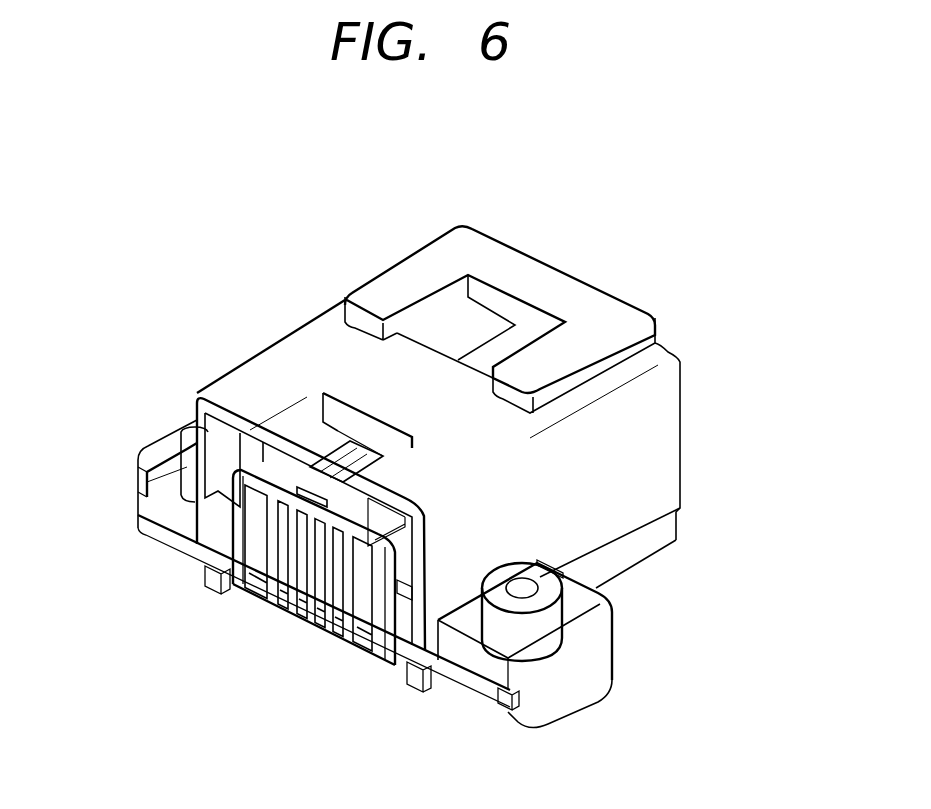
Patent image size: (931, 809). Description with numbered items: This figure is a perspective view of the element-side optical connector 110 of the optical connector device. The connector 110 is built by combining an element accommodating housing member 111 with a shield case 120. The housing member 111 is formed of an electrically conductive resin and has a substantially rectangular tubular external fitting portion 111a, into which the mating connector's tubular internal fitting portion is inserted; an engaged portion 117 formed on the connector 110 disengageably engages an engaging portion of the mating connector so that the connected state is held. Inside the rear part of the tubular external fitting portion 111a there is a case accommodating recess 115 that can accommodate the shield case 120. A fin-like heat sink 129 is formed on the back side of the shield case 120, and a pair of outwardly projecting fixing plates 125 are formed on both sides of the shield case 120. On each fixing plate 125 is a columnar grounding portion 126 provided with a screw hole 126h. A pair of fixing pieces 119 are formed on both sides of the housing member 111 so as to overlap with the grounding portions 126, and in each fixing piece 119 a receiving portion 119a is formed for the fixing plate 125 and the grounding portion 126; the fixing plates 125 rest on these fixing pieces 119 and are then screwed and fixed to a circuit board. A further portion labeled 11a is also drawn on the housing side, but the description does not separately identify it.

The element-side optical connector 110 is at (368, 222).
The element accommodating housing member 111 is at (305, 330).
The tubular external fitting portion 111a is at (672, 410).
The engaged portion 117 is at (498, 300).
The case accommodating recess 115 is at (340, 513).
The front frame 11a is at (140, 522).
The shield case 120 is at (320, 633).
The heat sink 129 is at (277, 592).
The receiving portion 119a is at (155, 438).
The fixing piece 119 is at (570, 707).
The grounding portion 126 is at (190, 467).
The screw hole 126h is at (522, 575).
The fixing plate 125 is at (183, 540).